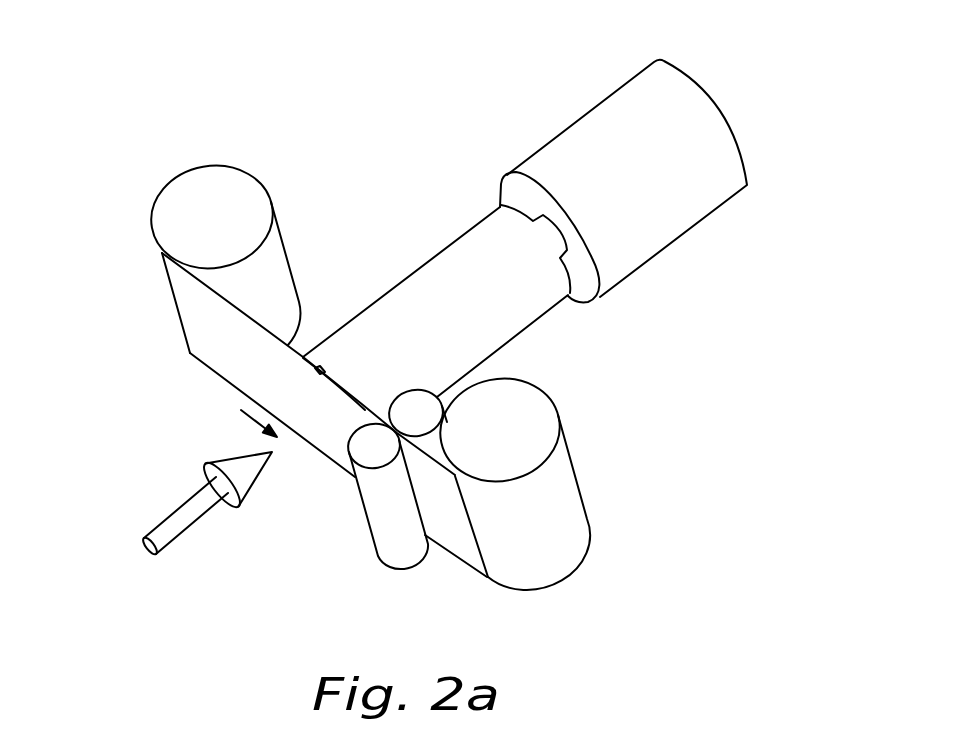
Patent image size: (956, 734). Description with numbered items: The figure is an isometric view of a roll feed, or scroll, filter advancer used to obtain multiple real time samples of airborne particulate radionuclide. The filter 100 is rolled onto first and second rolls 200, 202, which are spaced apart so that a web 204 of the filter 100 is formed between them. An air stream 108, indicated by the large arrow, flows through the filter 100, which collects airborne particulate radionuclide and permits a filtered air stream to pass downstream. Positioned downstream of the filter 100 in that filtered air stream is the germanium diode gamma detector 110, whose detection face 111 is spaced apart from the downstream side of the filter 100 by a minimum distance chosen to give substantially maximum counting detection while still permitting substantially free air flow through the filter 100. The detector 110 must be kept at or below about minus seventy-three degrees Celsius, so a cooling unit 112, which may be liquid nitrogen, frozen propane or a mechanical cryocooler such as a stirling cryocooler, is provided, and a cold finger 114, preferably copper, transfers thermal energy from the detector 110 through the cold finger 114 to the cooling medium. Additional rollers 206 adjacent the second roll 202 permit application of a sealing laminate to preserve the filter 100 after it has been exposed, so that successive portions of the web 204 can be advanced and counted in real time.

The filter 100 is at (225, 381).
The air stream 108 is at (165, 512).
The germanium diode gamma detector 110 is at (436, 253).
The detection face 111 is at (303, 358).
The cooling unit 112 is at (632, 80).
The cold finger 114 is at (585, 301).
The first roll 200 is at (255, 149).
The second roll 202 is at (569, 382).
The web 204 is at (305, 469).
The additional rollers 206 is at (355, 549).